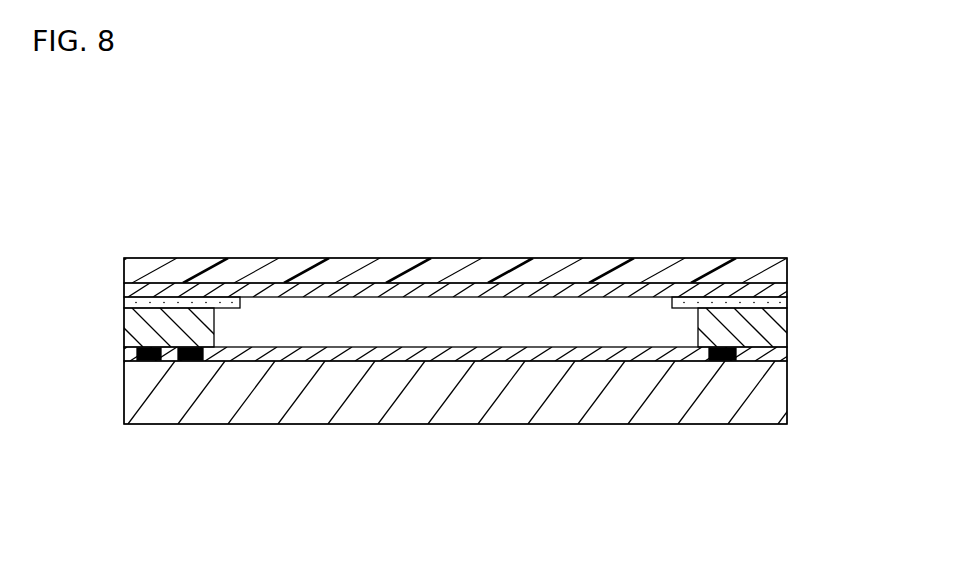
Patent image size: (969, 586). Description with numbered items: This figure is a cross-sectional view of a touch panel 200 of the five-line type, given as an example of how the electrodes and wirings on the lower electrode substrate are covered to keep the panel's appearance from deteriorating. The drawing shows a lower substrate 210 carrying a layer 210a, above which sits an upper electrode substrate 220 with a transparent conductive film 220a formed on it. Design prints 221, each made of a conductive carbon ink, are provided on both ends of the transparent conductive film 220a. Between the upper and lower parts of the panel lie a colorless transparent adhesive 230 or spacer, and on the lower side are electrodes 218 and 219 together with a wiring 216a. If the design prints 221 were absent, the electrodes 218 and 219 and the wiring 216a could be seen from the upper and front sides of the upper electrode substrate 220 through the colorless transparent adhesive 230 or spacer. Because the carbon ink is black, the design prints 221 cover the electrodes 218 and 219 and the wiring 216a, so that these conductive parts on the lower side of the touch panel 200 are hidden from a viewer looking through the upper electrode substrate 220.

The touch panel 200 is at (182, 156).
The lower substrate 210 is at (457, 425).
The first sensing electrode layer 210a is at (507, 347).
The wiring 216a is at (132, 363).
The electrode 218 is at (203, 347).
The electrode 219 is at (737, 362).
The upper electrode substrate 220 is at (457, 258).
The transparent conductive film 220a is at (432, 297).
The design print 221 is at (783, 300).
The transparent adhesive 230 is at (137, 330).